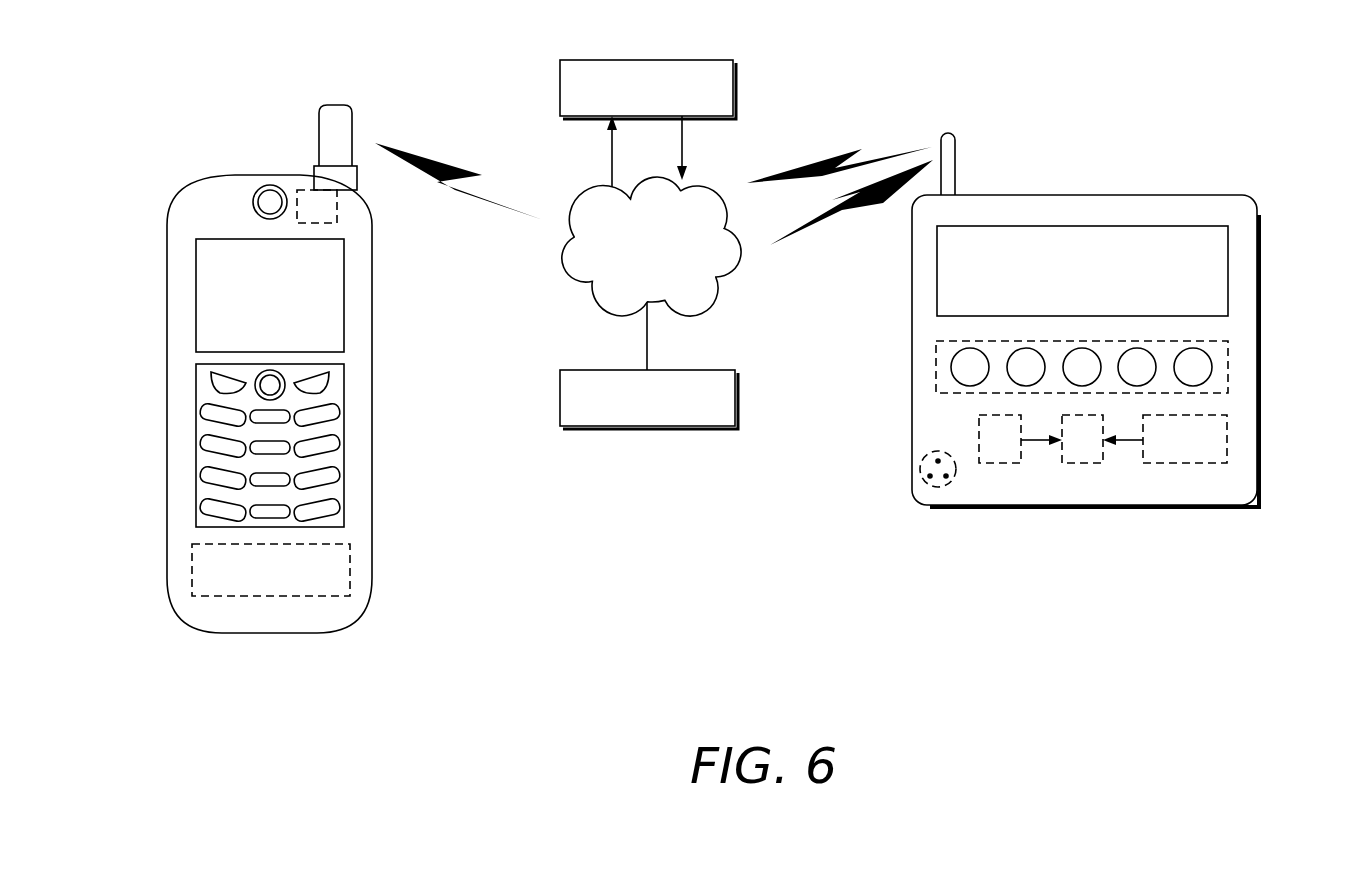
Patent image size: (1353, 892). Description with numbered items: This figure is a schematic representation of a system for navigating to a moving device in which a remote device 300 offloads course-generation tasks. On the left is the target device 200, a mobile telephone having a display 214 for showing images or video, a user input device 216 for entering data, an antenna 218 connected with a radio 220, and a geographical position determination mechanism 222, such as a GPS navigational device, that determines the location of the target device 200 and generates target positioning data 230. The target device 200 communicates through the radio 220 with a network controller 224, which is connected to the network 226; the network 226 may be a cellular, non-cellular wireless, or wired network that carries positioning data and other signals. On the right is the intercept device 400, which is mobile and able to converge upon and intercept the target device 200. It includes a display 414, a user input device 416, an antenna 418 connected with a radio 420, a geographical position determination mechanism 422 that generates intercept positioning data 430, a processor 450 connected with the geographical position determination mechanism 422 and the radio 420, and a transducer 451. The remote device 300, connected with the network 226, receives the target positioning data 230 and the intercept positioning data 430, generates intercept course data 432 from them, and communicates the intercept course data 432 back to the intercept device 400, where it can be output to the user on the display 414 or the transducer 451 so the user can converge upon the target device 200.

The target device 200 is at (160, 190).
The display 214 is at (237, 239).
The user input device 216 is at (358, 491).
The antenna 218 is at (354, 125).
The radio 220 is at (313, 189).
The geographical position determination mechanism 222 is at (351, 568).
The network controller 224 is at (720, 371).
The network 226 is at (688, 271).
The target positioning data 230 is at (611, 149).
The remote device 300 is at (715, 61).
The intercept device 400 is at (1268, 186).
The display 414 is at (1230, 270).
The user input device 416 is at (1236, 402).
The antenna 418 is at (956, 165).
The radio 420 is at (1000, 464).
The geographical position determination mechanism 422 is at (1186, 464).
The intercept positioning data 430 is at (611, 175).
The intercept course data 432 is at (683, 149).
The processor 450 is at (1083, 464).
The transducer 451 is at (938, 451).